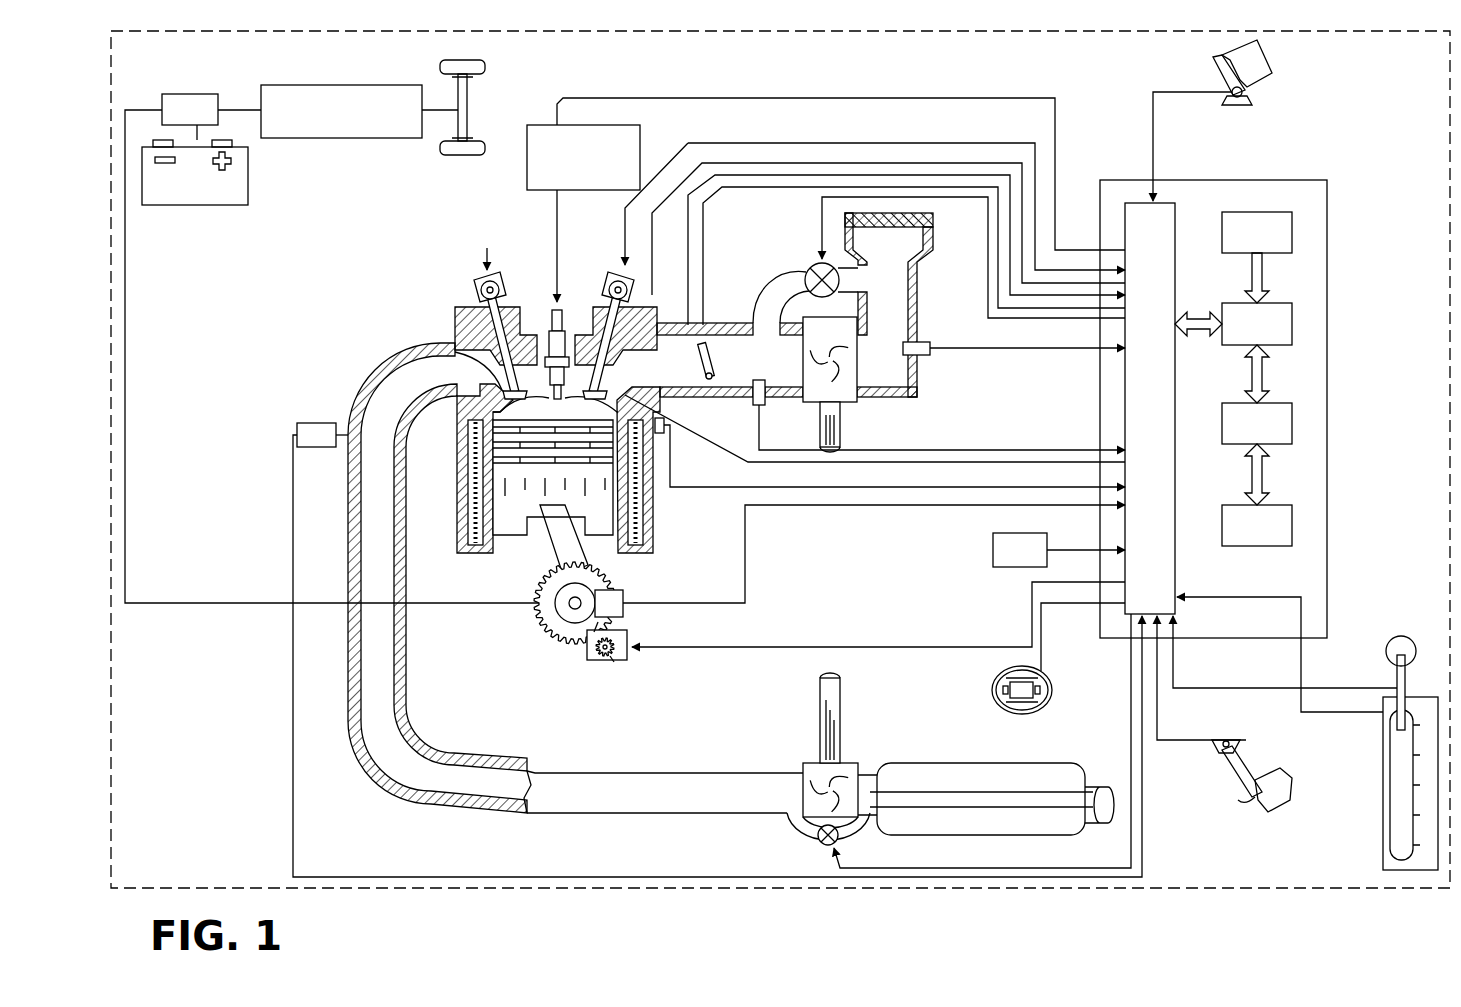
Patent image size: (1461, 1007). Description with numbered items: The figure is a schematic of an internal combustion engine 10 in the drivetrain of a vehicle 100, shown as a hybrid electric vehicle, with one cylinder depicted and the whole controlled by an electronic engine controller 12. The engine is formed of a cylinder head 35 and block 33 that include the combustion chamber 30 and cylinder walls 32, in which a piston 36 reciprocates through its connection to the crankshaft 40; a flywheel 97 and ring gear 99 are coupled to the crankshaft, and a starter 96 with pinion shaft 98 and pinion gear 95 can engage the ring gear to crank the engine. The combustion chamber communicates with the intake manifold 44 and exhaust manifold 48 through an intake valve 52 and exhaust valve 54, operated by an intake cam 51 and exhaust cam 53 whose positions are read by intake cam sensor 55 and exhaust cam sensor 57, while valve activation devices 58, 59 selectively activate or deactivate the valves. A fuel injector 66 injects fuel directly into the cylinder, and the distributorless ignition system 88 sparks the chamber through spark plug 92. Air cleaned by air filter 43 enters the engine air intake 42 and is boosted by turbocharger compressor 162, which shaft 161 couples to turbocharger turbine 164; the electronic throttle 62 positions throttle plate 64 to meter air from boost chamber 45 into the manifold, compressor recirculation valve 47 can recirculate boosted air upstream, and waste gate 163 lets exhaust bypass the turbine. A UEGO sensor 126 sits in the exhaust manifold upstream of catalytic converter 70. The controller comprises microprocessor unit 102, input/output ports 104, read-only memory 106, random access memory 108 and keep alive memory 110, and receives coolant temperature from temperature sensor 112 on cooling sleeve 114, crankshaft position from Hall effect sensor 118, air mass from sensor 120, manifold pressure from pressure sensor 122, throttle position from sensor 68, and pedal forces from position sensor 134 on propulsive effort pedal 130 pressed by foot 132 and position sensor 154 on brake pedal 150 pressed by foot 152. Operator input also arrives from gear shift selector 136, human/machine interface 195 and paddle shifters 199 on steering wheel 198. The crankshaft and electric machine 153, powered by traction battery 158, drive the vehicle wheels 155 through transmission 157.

The internal combustion engine 10 is at (392, 262).
The electronic engine controller 12 is at (1327, 185).
The combustion chamber 30 is at (510, 440).
The cylinder walls 32 is at (500, 548).
The block 33 is at (456, 447).
The cylinder head 35 is at (452, 310).
The piston 36 is at (548, 520).
The crankshaft 40 is at (584, 611).
The engine air intake 42 is at (824, 298).
The air filter 43 is at (905, 228).
The intake manifold 44 is at (658, 372).
The boost chamber 45 is at (754, 373).
The compressor recirculation valve 47 is at (812, 266).
The exhaust manifold 48 is at (410, 381).
The intake cam 51 is at (851, 224).
The intake valve 52 is at (608, 388).
The exhaust cam 53 is at (486, 275).
The exhaust valve 54 is at (485, 355).
The intake cam sensor 55 is at (630, 298).
The exhaust cam sensor 57 is at (487, 272).
The valve activation device 58 is at (501, 292).
The valve activation device 59 is at (608, 305).
The electronic throttle 62 is at (712, 358).
The throttle plate 64 is at (714, 377).
The fuel injector 66 is at (664, 427).
The throttle position sensor 68 is at (693, 345).
The catalytic converter 70 is at (915, 763).
The distributorless ignition system 88 is at (640, 128).
The spark plug 92 is at (563, 305).
The pinion gear 95 is at (616, 660).
The starter 96 is at (816, 642).
The flywheel 97 is at (558, 612).
The pinion shaft 98 is at (600, 656).
The ring gear 99 is at (595, 652).
The vehicle 100 is at (111, 645).
The microprocessor unit 102 is at (1292, 330).
The input/output ports 104 is at (1175, 210).
The read-only memory 106 is at (1292, 230).
The random access memory 108 is at (1292, 425).
The keep alive memory 110 is at (1292, 525).
The temperature sensor 112 is at (670, 462).
The cooling sleeve 114 is at (655, 505).
The Hall effect sensor 118 is at (623, 595).
The air mass sensor 120 is at (932, 345).
The pressure sensor 122 is at (753, 397).
The Universal Exhaust Gas Oxygen sensor 126 is at (297, 428).
The propulsive effort pedal 130 is at (1271, 117).
The foot 132 is at (1270, 55).
The position sensor 134 is at (1242, 92).
The gear shift selector 136 is at (1388, 662).
The brake pedal 150 is at (1224, 714).
The foot 152 is at (1268, 772).
The electric machine 153 is at (197, 94).
The position sensor 154 is at (1222, 742).
The vehicle wheels 155 is at (478, 74).
The transmission 157 is at (372, 138).
The traction battery 158 is at (200, 205).
The shaft 161 is at (820, 425).
The turbocharger compressor 162 is at (845, 388).
The waste gate 163 is at (823, 845).
The turbocharger turbine 164 is at (808, 763).
The human/machine interface 195 is at (1059, 550).
The steering wheel 198 is at (1028, 665).
The paddle shifters 199 is at (1045, 704).